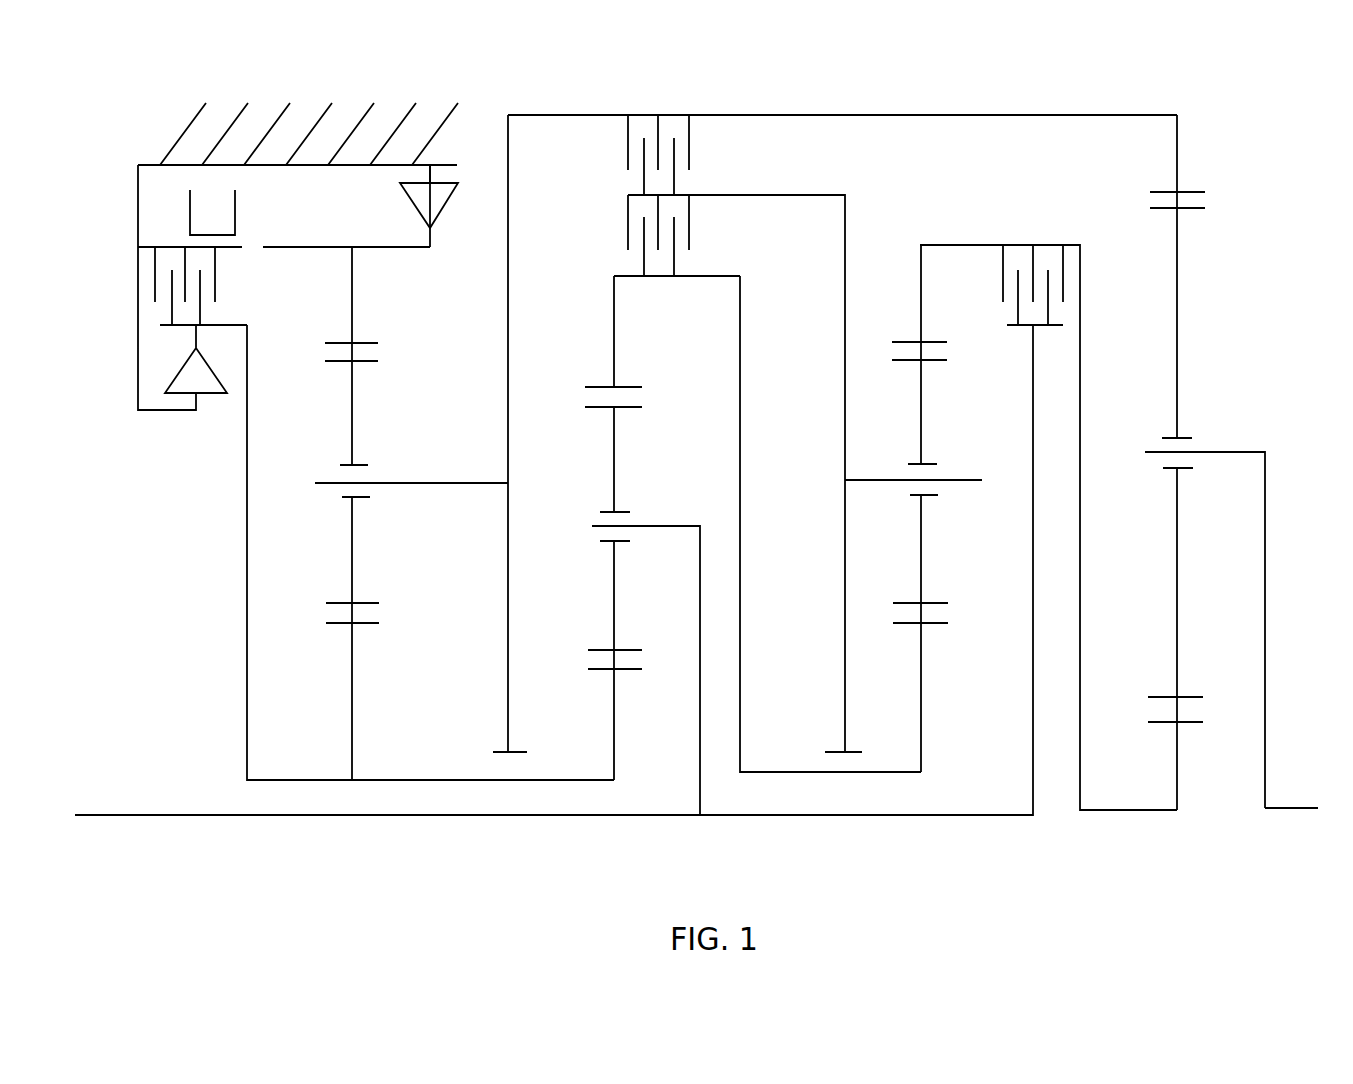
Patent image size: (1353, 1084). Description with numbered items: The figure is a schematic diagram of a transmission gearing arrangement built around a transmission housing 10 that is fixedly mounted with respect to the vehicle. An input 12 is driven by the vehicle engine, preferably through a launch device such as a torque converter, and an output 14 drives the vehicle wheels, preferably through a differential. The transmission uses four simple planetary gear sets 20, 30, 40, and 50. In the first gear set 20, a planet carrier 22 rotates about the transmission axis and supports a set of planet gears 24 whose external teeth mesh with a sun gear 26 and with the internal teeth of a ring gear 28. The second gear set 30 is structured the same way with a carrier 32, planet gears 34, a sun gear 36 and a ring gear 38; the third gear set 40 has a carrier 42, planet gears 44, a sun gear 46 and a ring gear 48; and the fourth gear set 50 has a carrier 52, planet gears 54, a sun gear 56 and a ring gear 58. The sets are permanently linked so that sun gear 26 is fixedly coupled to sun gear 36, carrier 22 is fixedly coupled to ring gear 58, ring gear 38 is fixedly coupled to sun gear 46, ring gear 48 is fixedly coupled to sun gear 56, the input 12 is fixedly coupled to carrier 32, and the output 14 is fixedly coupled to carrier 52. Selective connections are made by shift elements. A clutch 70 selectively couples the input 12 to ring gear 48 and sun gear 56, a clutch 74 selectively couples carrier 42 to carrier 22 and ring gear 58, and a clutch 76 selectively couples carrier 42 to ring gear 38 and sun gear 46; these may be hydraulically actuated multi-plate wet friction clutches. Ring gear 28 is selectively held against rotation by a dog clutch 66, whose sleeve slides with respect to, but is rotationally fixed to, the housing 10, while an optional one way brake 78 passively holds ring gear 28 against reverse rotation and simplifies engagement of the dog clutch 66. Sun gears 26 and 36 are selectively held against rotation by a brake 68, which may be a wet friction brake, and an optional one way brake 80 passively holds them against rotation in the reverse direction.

The transmission housing 10 is at (192, 122).
The input shaft 12 is at (282, 812).
The output shaft 14 is at (1318, 808).
The first planetary gear set 20 is at (351, 561).
The planet carrier 22 is at (507, 608).
The planet gears 24 is at (355, 422).
The sun gear 26 is at (352, 665).
The ring gear 28 is at (352, 303).
The second planetary gear set 30 is at (759, 575).
The carrier 32 is at (700, 617).
The planet gears 34 is at (618, 465).
The sun gear 36 is at (612, 710).
The ring gear 38 is at (615, 352).
The third planetary gear set 40 is at (924, 559).
The carrier 42 is at (845, 443).
The planet gears 44 is at (923, 420).
The sun gear 46 is at (920, 663).
The ring gear 48 is at (920, 303).
The fourth planetary gear set 50 is at (1178, 491).
The carrier 52 is at (1247, 452).
The planet gears 54 is at (1177, 382).
The sun gear 56 is at (1175, 767).
The ring gear 58 is at (1177, 165).
The dog clutch 66 is at (235, 210).
The brake 68 is at (215, 288).
The clutch 70 is at (1047, 243).
The clutch 74 is at (628, 155).
The clutch 76 is at (628, 225).
The one way brake 78 is at (442, 210).
The one way brake 80 is at (212, 395).